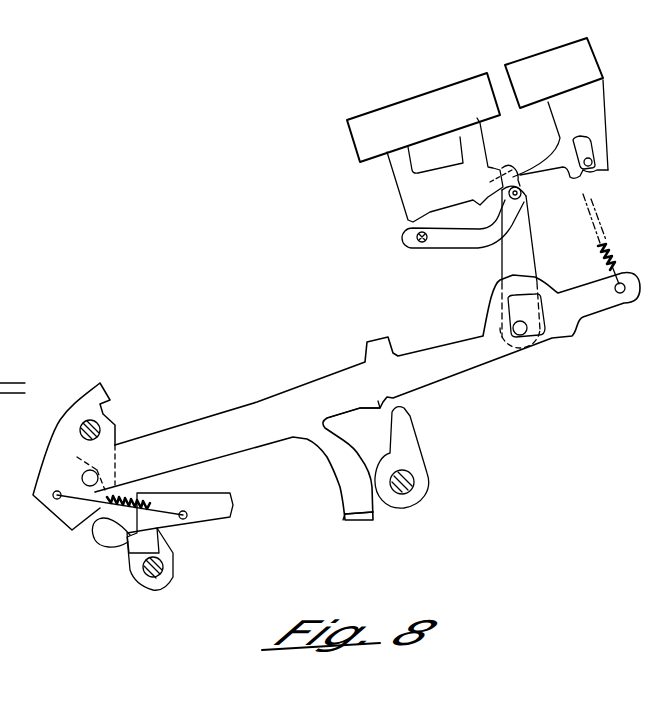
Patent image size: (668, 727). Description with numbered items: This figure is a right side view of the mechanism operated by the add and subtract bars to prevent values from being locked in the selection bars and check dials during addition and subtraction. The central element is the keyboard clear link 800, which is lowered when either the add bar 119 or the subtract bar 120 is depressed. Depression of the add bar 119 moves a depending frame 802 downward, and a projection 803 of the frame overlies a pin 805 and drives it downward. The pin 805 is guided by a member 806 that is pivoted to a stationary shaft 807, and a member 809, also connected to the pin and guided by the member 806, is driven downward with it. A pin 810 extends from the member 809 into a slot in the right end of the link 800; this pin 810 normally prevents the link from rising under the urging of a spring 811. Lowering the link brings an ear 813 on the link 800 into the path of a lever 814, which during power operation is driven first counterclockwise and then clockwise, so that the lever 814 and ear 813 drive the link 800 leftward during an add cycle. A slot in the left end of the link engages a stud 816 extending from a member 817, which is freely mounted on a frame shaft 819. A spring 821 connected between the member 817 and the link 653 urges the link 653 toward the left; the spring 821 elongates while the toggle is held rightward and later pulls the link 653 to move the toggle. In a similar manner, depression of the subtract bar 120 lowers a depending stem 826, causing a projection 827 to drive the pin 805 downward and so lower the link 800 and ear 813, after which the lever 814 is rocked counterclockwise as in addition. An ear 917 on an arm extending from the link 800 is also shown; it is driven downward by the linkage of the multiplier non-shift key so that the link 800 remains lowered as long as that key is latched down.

The keyboard clear link 800 is at (257, 402).
The add bar 119 is at (392, 110).
The subtract bar 120 is at (543, 58).
The depending frame 802 is at (402, 183).
The projection 803 is at (502, 167).
The pin 805 is at (520, 192).
The member 806 is at (448, 240).
The stationary shaft 807 is at (417, 237).
The member 809 is at (523, 243).
The pin 810 is at (525, 337).
The spring 811 is at (613, 253).
The ear 813 is at (378, 410).
The lever 814 is at (417, 450).
The stud 816 is at (98, 475).
The member 817 is at (67, 437).
The frame shaft 819 is at (100, 427).
The spring 821 is at (147, 498).
The depending stem 826 is at (587, 120).
The projection 827 is at (543, 173).
The link 653 is at (203, 517).
The ear 917 is at (355, 522).